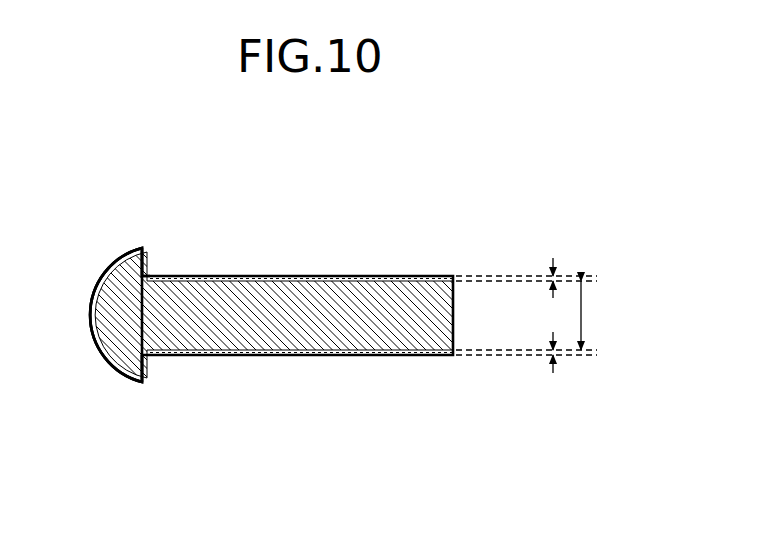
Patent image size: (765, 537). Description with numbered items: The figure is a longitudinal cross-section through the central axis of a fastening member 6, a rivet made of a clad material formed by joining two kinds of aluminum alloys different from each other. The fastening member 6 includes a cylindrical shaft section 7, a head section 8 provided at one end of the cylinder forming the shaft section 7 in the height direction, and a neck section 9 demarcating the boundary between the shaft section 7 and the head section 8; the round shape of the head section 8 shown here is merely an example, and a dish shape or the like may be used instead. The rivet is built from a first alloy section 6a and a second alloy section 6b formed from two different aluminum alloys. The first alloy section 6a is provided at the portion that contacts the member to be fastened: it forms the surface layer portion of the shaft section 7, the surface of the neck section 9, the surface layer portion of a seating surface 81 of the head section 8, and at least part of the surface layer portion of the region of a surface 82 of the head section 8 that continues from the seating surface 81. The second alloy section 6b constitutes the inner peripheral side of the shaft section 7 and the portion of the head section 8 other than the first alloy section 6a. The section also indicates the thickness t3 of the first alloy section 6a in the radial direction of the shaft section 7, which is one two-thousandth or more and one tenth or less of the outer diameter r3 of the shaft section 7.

The fastening member 6 is at (398, 180).
The first alloy section 6a is at (293, 275).
The second alloy section 6b is at (110, 360).
The shaft section 7 is at (364, 341).
The head section 8 is at (105, 316).
The seating surface 81 is at (148, 370).
The surface of the head section 82 is at (90, 332).
The neck section 9 is at (150, 271).
The thickness of the first alloy section t3 is at (556, 277).
The outer diameter of the shaft section r3 is at (592, 315).